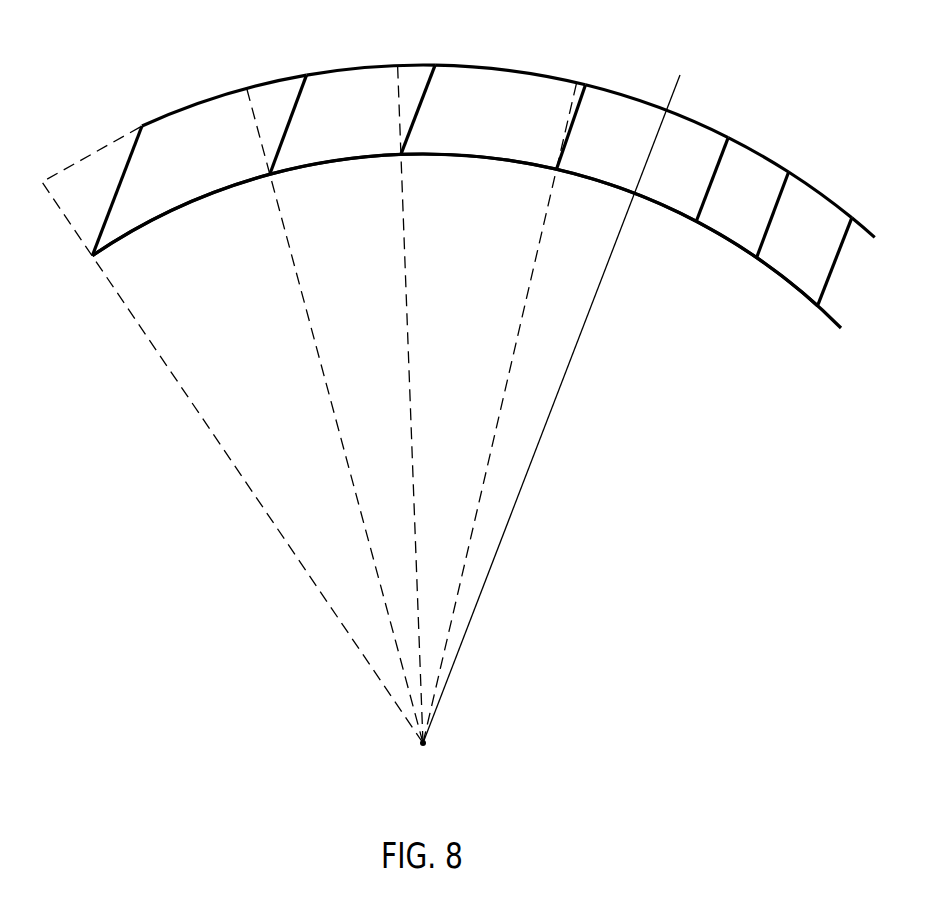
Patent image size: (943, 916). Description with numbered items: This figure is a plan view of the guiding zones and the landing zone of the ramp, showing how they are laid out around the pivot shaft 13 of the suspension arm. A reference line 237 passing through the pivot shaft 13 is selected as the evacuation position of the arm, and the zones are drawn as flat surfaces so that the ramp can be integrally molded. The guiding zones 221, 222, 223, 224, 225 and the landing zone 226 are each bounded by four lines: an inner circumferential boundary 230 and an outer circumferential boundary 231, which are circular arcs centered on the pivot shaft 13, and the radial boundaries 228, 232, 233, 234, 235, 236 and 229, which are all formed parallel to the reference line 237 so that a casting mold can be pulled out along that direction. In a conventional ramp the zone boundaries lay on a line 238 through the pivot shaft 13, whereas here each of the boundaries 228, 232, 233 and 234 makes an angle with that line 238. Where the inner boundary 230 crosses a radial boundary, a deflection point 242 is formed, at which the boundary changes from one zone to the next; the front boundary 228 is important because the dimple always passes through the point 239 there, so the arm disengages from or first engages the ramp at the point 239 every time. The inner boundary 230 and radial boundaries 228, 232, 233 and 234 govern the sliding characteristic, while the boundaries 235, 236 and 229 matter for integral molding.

The pivot shaft 13 is at (422, 761).
The guiding zone 221 is at (187, 123).
The guiding zone 222 is at (357, 88).
The guiding zone 223 is at (517, 90).
The guiding zone 224 is at (757, 168).
The guiding zone 225 is at (820, 208).
The landing zone 226 is at (623, 110).
The radial boundary 228 is at (122, 177).
The radial boundary 229 is at (837, 269).
The inner circumferential boundary 230 is at (163, 220).
The outer circumferential boundary 231 is at (265, 80).
The radial boundary 232 is at (299, 105).
The radial boundary 233 is at (425, 108).
The radial boundary 234 is at (577, 120).
The radial boundary 235 is at (714, 180).
The radial boundary 236 is at (768, 228).
The reference line 237 is at (531, 472).
The line passing through the pivot shaft 238 is at (348, 467).
The point 239 is at (92, 262).
The deflection point 242 is at (271, 177).